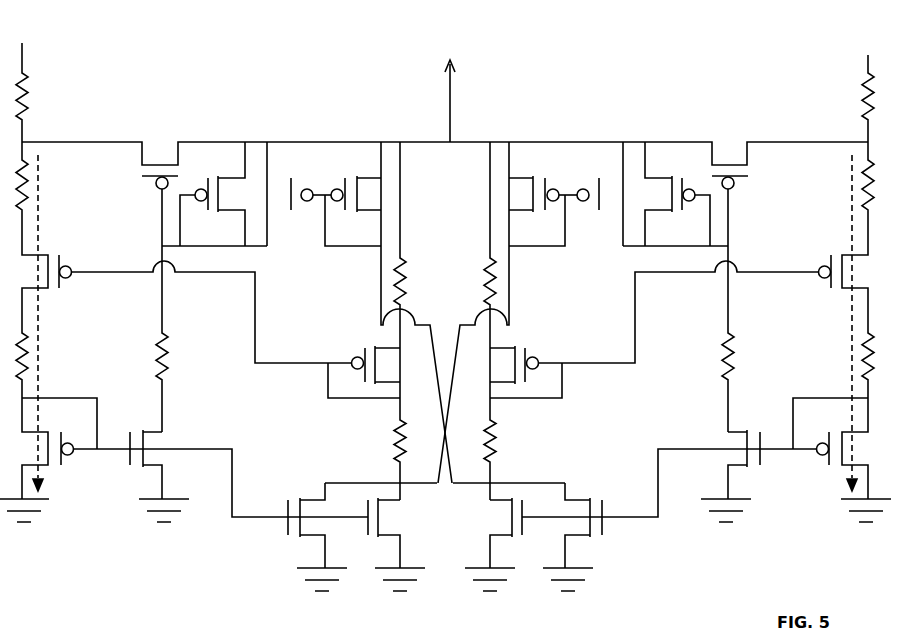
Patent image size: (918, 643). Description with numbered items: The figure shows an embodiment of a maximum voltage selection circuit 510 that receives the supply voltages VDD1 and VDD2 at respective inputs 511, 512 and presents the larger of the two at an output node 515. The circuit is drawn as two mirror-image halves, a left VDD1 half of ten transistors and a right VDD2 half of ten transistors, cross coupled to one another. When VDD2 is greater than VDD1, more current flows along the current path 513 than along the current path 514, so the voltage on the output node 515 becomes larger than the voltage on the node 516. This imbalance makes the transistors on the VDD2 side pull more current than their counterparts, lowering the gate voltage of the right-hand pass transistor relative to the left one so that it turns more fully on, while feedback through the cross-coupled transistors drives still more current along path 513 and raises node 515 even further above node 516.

The maximum voltage selection circuit 510 is at (208, 53).
The input 511 is at (22, 58).
The input 512 is at (868, 58).
The current path 513 is at (852, 183).
The current path 514 is at (40, 198).
The output node 515 is at (807, 398).
The node 516 is at (83, 398).